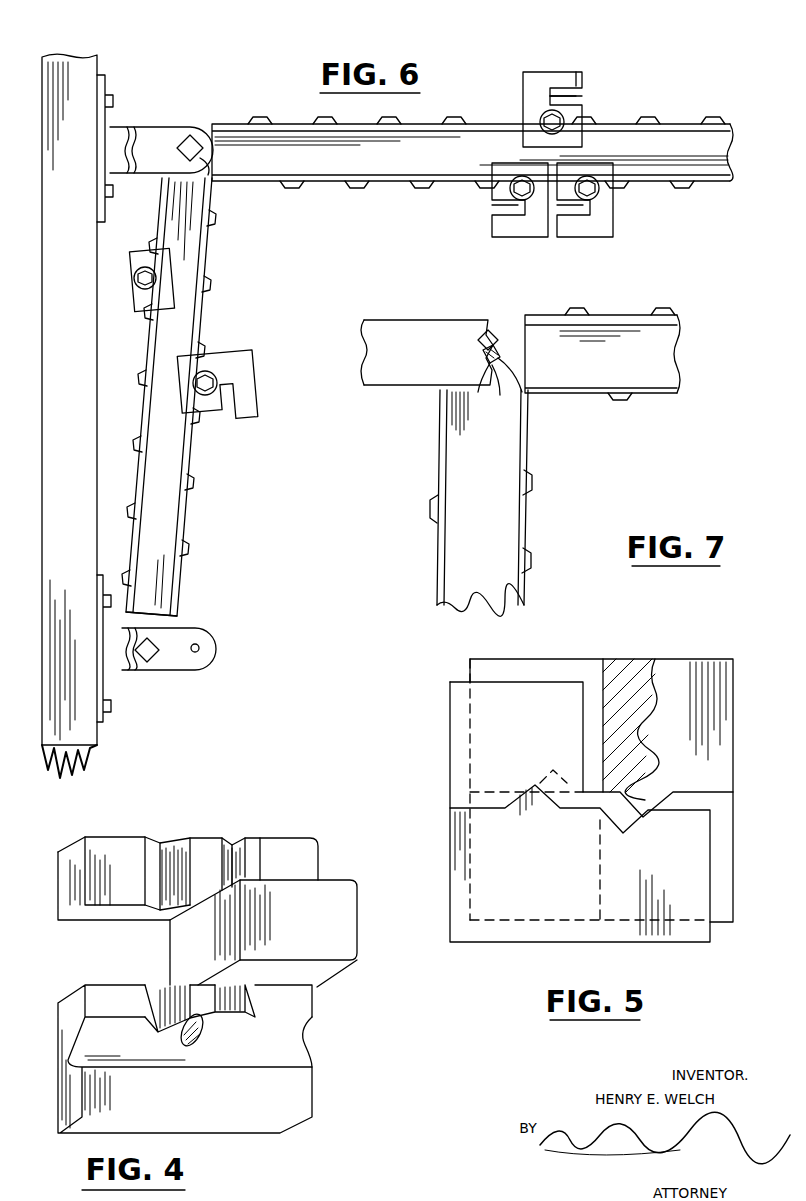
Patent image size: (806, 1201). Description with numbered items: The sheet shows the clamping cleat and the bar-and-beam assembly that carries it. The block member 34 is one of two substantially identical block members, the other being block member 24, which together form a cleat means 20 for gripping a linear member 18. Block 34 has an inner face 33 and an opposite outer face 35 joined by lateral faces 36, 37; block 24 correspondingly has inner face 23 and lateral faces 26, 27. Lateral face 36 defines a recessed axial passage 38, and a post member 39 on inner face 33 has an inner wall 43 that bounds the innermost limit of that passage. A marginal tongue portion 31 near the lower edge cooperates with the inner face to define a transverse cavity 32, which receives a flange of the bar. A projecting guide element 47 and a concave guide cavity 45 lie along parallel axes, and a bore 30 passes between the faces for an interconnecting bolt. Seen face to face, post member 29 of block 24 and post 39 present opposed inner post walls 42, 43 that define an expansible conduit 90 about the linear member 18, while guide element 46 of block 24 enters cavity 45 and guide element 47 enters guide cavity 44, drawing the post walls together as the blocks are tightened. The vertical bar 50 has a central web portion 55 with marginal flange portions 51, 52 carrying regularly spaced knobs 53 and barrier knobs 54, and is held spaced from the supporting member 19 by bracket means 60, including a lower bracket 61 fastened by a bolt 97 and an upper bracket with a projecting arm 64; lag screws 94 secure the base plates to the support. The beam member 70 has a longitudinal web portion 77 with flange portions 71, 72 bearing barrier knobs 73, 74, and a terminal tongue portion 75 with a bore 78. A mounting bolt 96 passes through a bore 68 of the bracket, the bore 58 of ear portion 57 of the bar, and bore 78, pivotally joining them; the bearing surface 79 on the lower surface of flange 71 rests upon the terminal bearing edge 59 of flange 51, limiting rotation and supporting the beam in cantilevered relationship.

In FIG. 6, the linear member 18 is at (552, 98).
In FIG. 6, the supporting member 19 is at (72, 390).
In FIG. 6, the cleat means 20 is at (522, 78).
In FIG. 5, the inner face 23 is at (462, 830).
In FIG. 6, the block member 24 is at (522, 102).
In FIG. 5, the block member 24 is at (473, 945).
In FIG. 5, the lateral face 26 is at (712, 852).
In FIG. 5, the lateral face 27 is at (450, 718).
In FIG. 5, the post member 29 is at (502, 682).
In FIG. 4, the bore 30 is at (205, 1030).
In FIG. 4, the marginal tongue portion 31 is at (173, 1102).
In FIG. 4, the transverse cavity 32 is at (308, 1045).
In FIG. 5, the inner face 33 is at (722, 795).
In FIG. 4, the inner face 33 is at (100, 874).
In FIG. 6, the block member 34 is at (584, 98).
In FIG. 5, the block member 34 is at (712, 650).
In FIG. 4, the block member 34 is at (310, 835).
In FIG. 5, the outer face 35 is at (657, 676).
In FIG. 4, the outer face 35 is at (58, 1087).
In FIG. 5, the lateral face 36 is at (468, 668).
In FIG. 4, the lateral face 36 is at (68, 1018).
In FIG. 5, the lateral face 37 is at (735, 697).
In FIG. 4, the lateral face 37 is at (315, 1095).
In FIG. 5, the recessed axial passage 38 is at (485, 665).
In FIG. 4, the recessed axial passage 38 is at (80, 950).
In FIG. 5, the post member 39 is at (718, 902).
In FIG. 4, the post member 39 is at (278, 922).
In FIG. 5, the inner post wall 42 is at (583, 700).
In FIG. 5, the inner wall 43 is at (615, 670).
In FIG. 4, the inner wall 43 is at (185, 949).
In FIG. 5, the guide cavity 44 is at (628, 830).
In FIG. 5, the guide cavity 45 is at (545, 775).
In FIG. 4, the guide cavity 45 is at (157, 838).
In FIG. 5, the guide element 46 is at (545, 808).
In FIG. 5, the projecting guide element 47 is at (640, 790).
In FIG. 4, the projecting guide element 47 is at (250, 842).
In FIG. 6, the vertical bar 50 is at (190, 572).
In FIG. 7, the vertical bar 50 is at (432, 553).
In FIG. 6, the marginal flange portion 51 is at (185, 515).
In FIG. 7, the marginal flange portion 51 is at (530, 512).
In FIG. 6, the marginal flange portion 52 is at (148, 225).
In FIG. 6, the knobs 53 is at (196, 482).
In FIG. 6, the barrier knobs 54 is at (142, 372).
In FIG. 6, the central web portion 55 is at (172, 455).
In FIG. 7, the central web portion 55 is at (472, 502).
In FIG. 7, the ear portion 57 is at (478, 380).
In FIG. 7, the bore 58 is at (497, 370).
In FIG. 7, the terminal bearing edge 59 is at (522, 395).
In FIG. 6, the bracket means 60 is at (165, 120).
In FIG. 7, the bracket means 60 is at (383, 318).
In FIG. 6, the bracket 61 is at (217, 648).
In FIG. 7, the projecting arm 64 is at (395, 372).
In FIG. 6, the bore 68 is at (196, 644).
In FIG. 7, the bore 68 is at (480, 358).
In FIG. 6, the beam member 70 is at (670, 122).
In FIG. 7, the beam member 70 is at (660, 404).
In FIG. 6, the flange portion 71 is at (456, 188).
In FIG. 7, the flange portion 71 is at (620, 398).
In FIG. 6, the flange portion 72 is at (615, 124).
In FIG. 6, the barrier knobs 73 is at (690, 186).
In FIG. 6, the barrier knobs 74 is at (258, 124).
In FIG. 6, the terminal tongue portion 75 is at (205, 130).
In FIG. 7, the terminal tongue portion 75 is at (510, 330).
In FIG. 6, the longitudinal web portion 77 is at (335, 168).
In FIG. 7, the longitudinal web portion 77 is at (609, 370).
In FIG. 7, the bore 78 is at (528, 346).
In FIG. 7, the bearing surface 79 is at (530, 392).
In FIG. 5, the expansible conduit 90 is at (598, 682).
In FIG. 6, the lag screws 94 is at (108, 705).
In FIG. 6, the mounting bolt 96 is at (208, 172).
In FIG. 7, the mounting bolt 96 is at (490, 328).
In FIG. 6, the bolt 97 is at (150, 660).